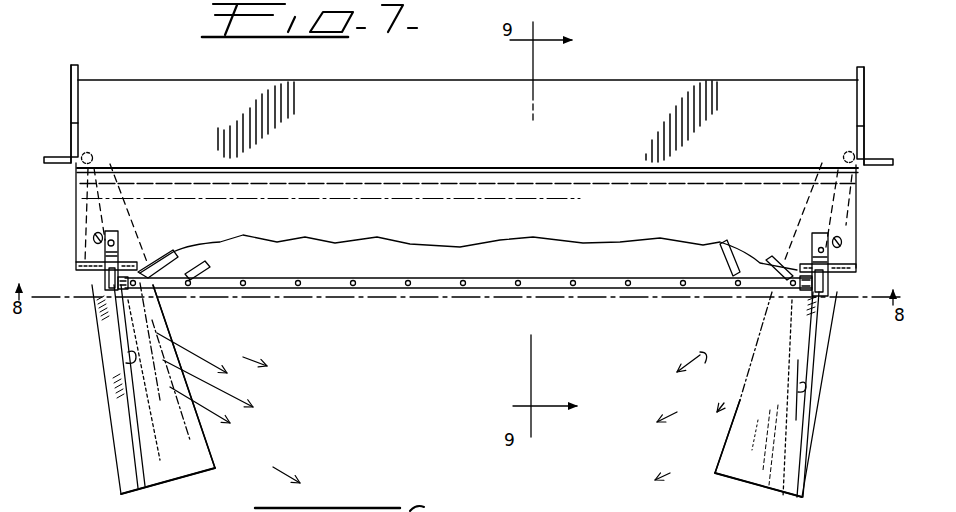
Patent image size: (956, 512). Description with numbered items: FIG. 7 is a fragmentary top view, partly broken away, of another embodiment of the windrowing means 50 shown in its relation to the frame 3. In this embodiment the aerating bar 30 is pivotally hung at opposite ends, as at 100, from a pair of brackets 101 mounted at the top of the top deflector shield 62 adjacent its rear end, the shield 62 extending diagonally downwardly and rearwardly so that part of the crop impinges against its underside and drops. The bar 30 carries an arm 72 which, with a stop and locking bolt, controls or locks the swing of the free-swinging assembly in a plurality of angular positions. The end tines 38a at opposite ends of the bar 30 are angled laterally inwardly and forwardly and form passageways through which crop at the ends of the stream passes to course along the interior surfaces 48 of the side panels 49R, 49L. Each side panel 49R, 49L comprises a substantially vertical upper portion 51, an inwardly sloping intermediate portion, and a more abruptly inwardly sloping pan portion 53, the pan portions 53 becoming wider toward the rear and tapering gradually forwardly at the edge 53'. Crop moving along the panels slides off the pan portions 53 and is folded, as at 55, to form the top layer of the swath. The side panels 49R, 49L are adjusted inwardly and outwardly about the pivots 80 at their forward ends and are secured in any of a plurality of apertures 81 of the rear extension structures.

The frame 3 is at (406, 120).
The aerating bar 30 is at (598, 291).
The end tines 38a is at (208, 262).
The interior surfaces 48 is at (128, 352).
The left side panel 49L is at (118, 426).
The right side panel 49R is at (808, 360).
The windrowing means 50 is at (459, 397).
The upper portion 51 is at (798, 421).
The pan portion 53 is at (461, 467).
The edge 53' is at (446, 396).
The folded material 55 is at (242, 358).
The top deflector shield 62 is at (582, 207).
The arm 72 is at (808, 290).
The pivots 80 is at (90, 151).
The apertures 81 is at (822, 245).
The pivotal hanging point 100 is at (103, 283).
The brackets 101 is at (105, 268).